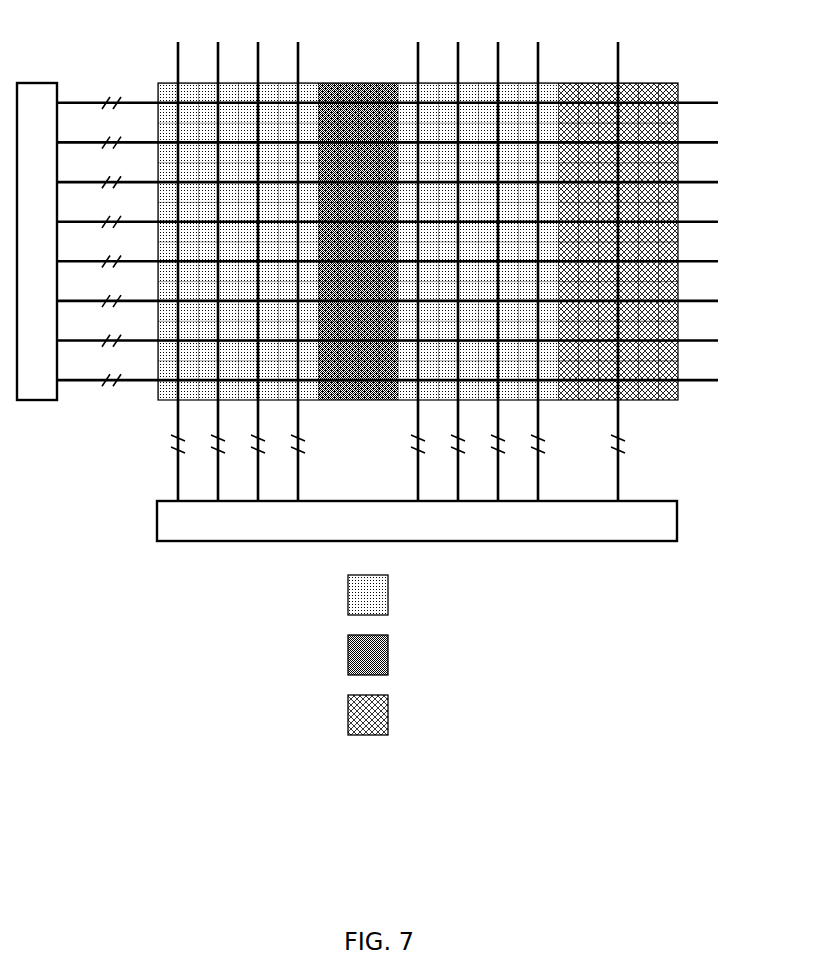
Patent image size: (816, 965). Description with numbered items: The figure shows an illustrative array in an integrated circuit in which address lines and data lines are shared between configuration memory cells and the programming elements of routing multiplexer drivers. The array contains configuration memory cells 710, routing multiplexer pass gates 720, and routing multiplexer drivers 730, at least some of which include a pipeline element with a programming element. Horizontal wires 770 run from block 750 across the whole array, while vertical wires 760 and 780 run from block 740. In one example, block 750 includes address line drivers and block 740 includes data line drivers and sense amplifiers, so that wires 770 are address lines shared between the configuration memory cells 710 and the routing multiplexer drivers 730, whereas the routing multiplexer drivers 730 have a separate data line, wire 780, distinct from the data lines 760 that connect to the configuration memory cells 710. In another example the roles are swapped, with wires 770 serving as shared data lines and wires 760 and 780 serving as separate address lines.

The configuration memory cells 710 is at (158, 82).
The routing multiplexer pass gates 720 is at (358, 82).
The routing multiplexer drivers 730 is at (588, 82).
The block 740 is at (157, 521).
The block 750 is at (40, 401).
The wires 760 is at (216, 52).
The wires 770 is at (707, 104).
The wires 780 is at (620, 62).